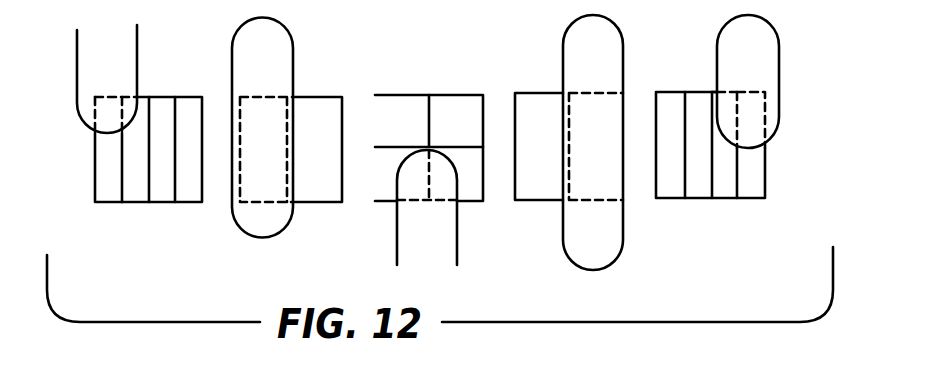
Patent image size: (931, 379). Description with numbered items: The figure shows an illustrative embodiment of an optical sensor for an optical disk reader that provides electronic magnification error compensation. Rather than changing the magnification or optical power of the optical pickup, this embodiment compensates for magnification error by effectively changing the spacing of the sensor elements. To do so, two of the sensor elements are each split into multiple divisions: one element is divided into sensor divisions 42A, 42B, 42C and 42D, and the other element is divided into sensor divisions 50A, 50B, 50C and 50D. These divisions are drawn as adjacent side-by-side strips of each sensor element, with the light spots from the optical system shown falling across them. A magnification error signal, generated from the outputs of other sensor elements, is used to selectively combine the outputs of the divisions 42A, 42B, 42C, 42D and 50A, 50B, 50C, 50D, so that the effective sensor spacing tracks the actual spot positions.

The sensor division 42A is at (107, 207).
The sensor division 42B is at (131, 205).
The sensor division 42C is at (160, 205).
The sensor division 42D is at (184, 205).
The sensor division 50A is at (672, 201).
The sensor division 50B is at (699, 201).
The sensor division 50C is at (725, 201).
The sensor division 50D is at (752, 201).